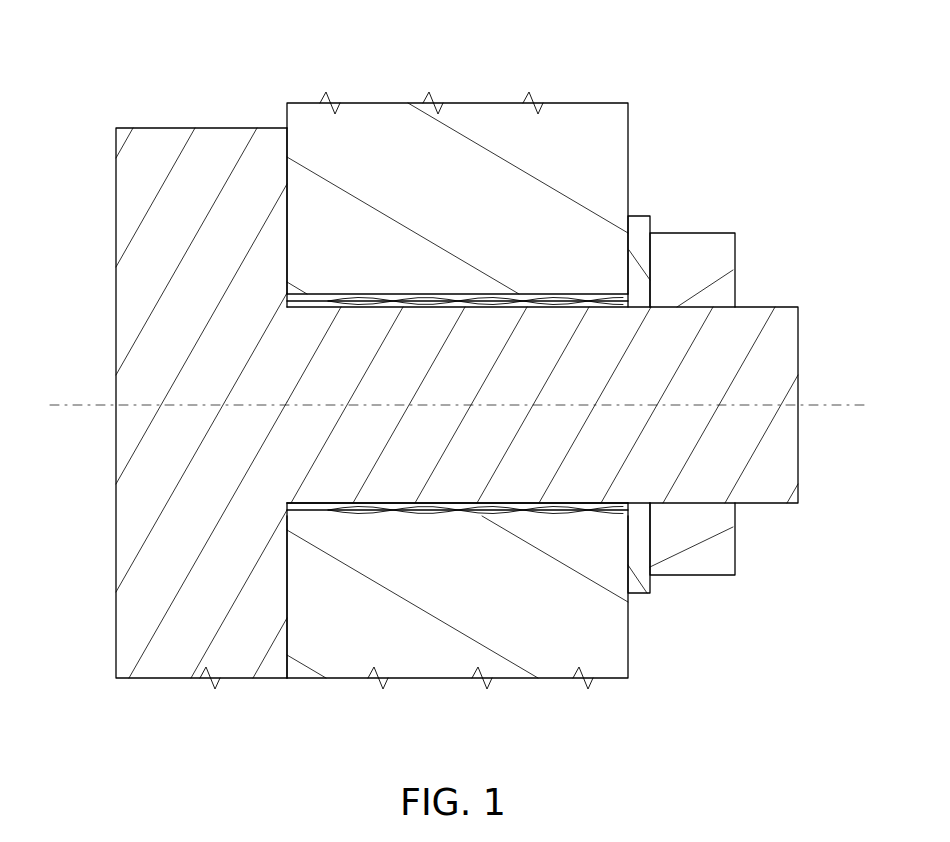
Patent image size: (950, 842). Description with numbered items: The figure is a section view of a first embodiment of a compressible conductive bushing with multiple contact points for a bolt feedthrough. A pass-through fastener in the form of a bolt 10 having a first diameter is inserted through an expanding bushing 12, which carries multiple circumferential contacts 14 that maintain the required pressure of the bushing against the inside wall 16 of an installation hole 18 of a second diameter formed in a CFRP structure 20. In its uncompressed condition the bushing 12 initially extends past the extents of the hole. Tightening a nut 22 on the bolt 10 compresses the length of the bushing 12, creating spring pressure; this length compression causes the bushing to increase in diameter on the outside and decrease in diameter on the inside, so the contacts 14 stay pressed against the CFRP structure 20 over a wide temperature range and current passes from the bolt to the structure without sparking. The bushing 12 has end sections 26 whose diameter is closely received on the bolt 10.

The bolt 10 is at (653, 342).
The expanding bushing 12 is at (553, 294).
The circumferential contacts 14 is at (397, 294).
The inside wall 16 is at (315, 294).
The installation hole 18 is at (323, 294).
The CFRP structure 20 is at (563, 615).
The nut 22 is at (703, 552).
The end sections 26 is at (320, 510).